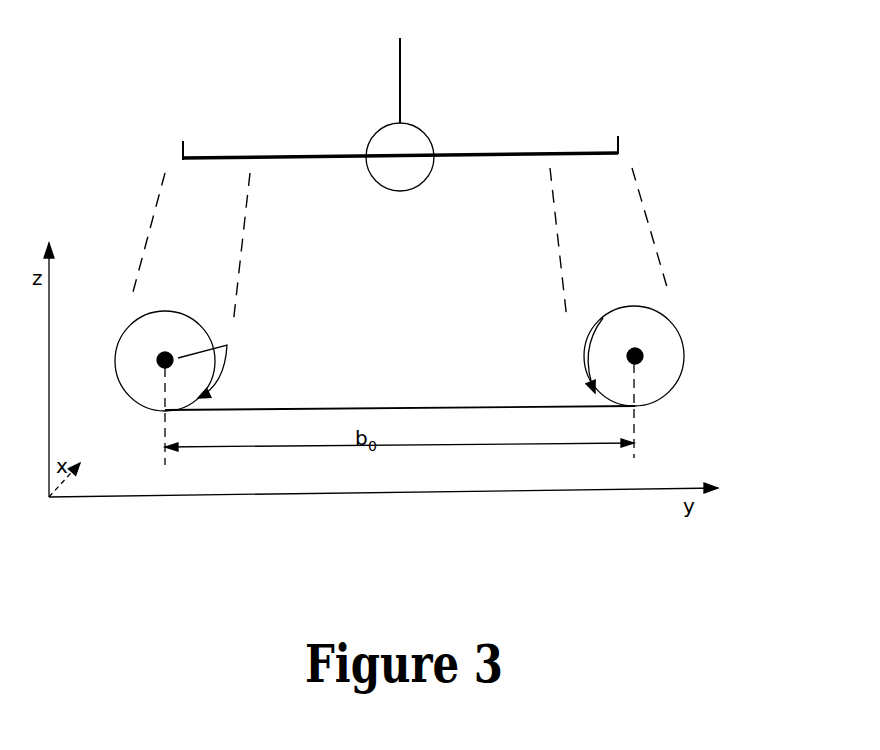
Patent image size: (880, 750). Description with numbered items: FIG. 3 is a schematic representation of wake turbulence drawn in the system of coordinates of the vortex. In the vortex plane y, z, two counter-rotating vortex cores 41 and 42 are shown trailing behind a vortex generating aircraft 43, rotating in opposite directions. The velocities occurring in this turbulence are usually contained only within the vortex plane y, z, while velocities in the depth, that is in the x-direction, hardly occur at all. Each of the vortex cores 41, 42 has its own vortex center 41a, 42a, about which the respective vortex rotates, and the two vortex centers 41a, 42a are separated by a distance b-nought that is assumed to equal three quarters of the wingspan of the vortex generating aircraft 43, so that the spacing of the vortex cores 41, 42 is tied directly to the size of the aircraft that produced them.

The vortex core 41 is at (168, 325).
The vortex center 41a is at (218, 363).
The vortex core 42 is at (620, 323).
The vortex center 42a is at (642, 343).
The vortex generating aircraft 43 is at (437, 122).